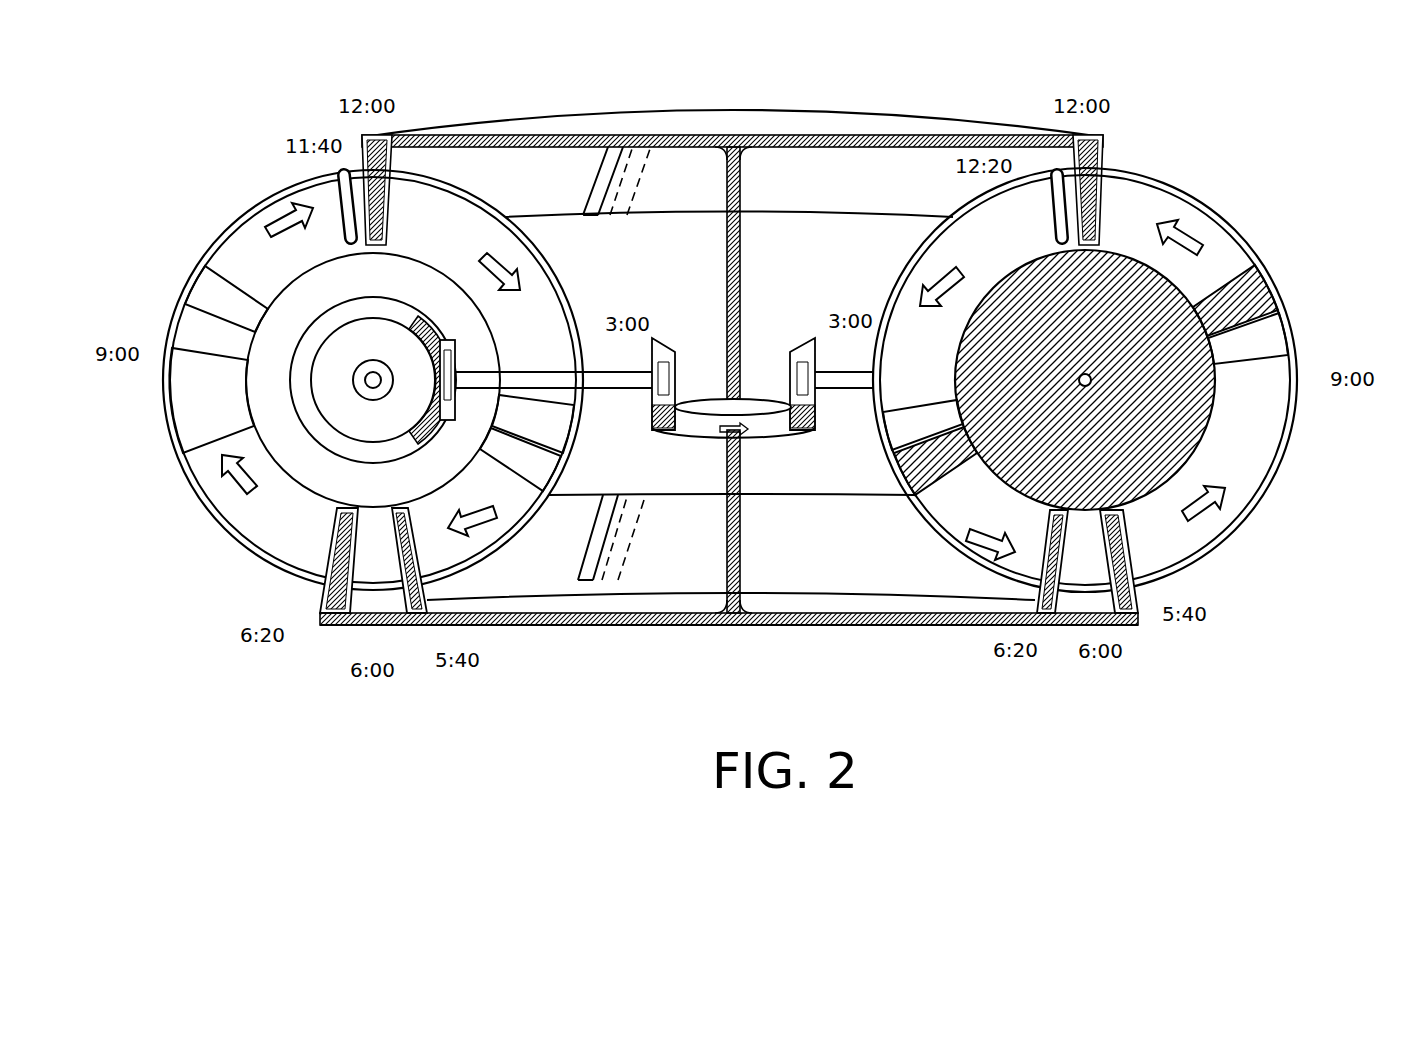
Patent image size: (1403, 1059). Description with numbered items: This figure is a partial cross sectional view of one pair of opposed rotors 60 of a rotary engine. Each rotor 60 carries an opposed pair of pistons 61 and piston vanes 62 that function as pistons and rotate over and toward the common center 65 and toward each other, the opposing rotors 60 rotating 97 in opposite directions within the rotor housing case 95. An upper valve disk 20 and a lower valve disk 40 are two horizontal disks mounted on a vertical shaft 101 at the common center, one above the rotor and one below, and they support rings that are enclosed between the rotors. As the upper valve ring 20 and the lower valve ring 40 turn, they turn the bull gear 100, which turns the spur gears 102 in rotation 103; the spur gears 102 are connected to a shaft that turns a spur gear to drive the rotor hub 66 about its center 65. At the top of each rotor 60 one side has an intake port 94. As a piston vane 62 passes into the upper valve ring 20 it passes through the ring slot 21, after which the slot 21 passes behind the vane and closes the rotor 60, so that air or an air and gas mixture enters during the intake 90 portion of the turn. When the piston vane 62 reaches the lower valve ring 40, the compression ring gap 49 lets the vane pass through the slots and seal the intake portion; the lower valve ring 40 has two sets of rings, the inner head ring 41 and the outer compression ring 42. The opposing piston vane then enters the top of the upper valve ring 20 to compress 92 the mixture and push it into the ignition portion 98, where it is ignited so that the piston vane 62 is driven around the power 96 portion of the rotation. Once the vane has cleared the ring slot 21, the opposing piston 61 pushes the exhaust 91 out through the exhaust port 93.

The upper valve disk 20 is at (652, 110).
The ring slot 21 is at (602, 168).
The lower valve disk 40 is at (780, 627).
The head ring 41 is at (425, 580).
The compression ring 42 is at (330, 568).
The compression ring gap 49 is at (593, 577).
The rotor 60 is at (1248, 170).
The piston 61 is at (170, 320).
The piston vane 62 is at (188, 273).
The center 65 is at (357, 383).
The rotor hub 66 is at (1207, 423).
The intake portion 90 is at (458, 235).
The exhaust 91 is at (285, 279).
The compression 92 is at (538, 514).
The exhaust port 93 is at (345, 192).
The intake port 94 is at (1067, 185).
The rotor housing case 95 is at (1247, 227).
The power portion 96 is at (297, 547).
The rotation 97 is at (282, 218).
The ignition portion 98 is at (335, 625).
The bull gear 100 is at (695, 438).
The vertical shaft 101 is at (742, 190).
The spur gear 102 is at (808, 347).
The rotation 103 is at (668, 353).